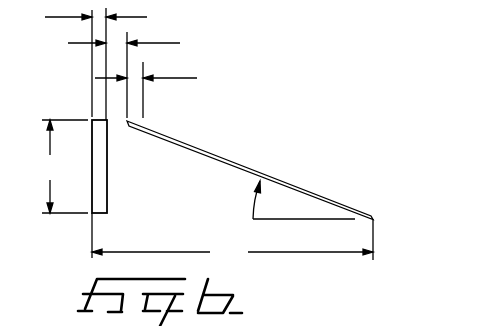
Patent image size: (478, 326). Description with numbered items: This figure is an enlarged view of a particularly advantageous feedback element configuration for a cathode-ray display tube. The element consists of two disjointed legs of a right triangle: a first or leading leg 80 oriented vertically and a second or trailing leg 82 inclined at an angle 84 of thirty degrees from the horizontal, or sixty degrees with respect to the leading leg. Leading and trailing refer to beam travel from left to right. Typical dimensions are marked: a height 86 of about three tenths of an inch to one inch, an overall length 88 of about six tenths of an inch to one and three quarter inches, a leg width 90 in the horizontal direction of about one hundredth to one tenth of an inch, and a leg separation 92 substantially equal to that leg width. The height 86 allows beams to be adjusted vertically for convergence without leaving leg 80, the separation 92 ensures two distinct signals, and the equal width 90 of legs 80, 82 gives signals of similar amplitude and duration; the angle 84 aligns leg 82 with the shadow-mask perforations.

The first or leading leg 80 is at (108, 174).
The second or trailing leg 82 is at (201, 149).
The angle 84 is at (254, 198).
The height 86 is at (62, 166).
The overall length 88 is at (232, 239).
The leg width 90 is at (122, 48).
The leg separation 92 is at (139, 44).